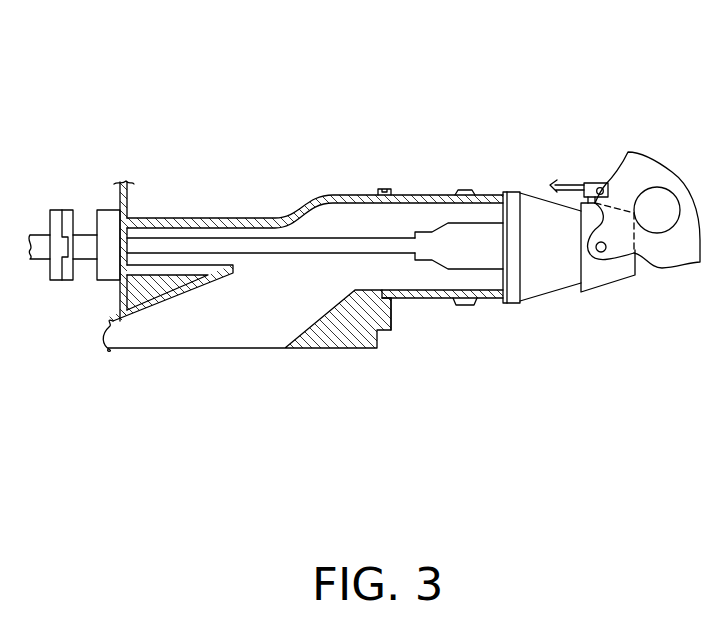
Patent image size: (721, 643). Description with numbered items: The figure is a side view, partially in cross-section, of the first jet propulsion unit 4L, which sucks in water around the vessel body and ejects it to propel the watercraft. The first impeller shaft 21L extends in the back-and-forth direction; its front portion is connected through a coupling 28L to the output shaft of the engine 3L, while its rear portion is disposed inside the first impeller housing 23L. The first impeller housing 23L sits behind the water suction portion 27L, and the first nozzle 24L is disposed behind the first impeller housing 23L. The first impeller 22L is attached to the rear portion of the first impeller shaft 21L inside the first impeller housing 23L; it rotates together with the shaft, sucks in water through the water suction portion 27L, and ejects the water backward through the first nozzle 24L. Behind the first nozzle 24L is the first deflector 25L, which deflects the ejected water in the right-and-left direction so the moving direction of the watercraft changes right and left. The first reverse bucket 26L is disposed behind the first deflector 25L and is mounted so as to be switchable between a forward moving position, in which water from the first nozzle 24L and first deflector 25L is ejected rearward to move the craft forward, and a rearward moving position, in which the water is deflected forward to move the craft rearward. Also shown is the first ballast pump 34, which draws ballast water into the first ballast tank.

The first jet propulsion unit 4L is at (377, 112).
The engine 3L is at (40, 252).
The coupling 28L is at (68, 215).
The water suction portion 27L is at (229, 356).
The first impeller housing 23L is at (452, 193).
The first impeller shaft 21L is at (317, 245).
The first impeller 22L is at (458, 258).
The first nozzle 24L is at (542, 277).
The first deflector 25L is at (600, 278).
The first reverse bucket 26L is at (640, 175).
The first ballast pump 34 is at (562, 182).